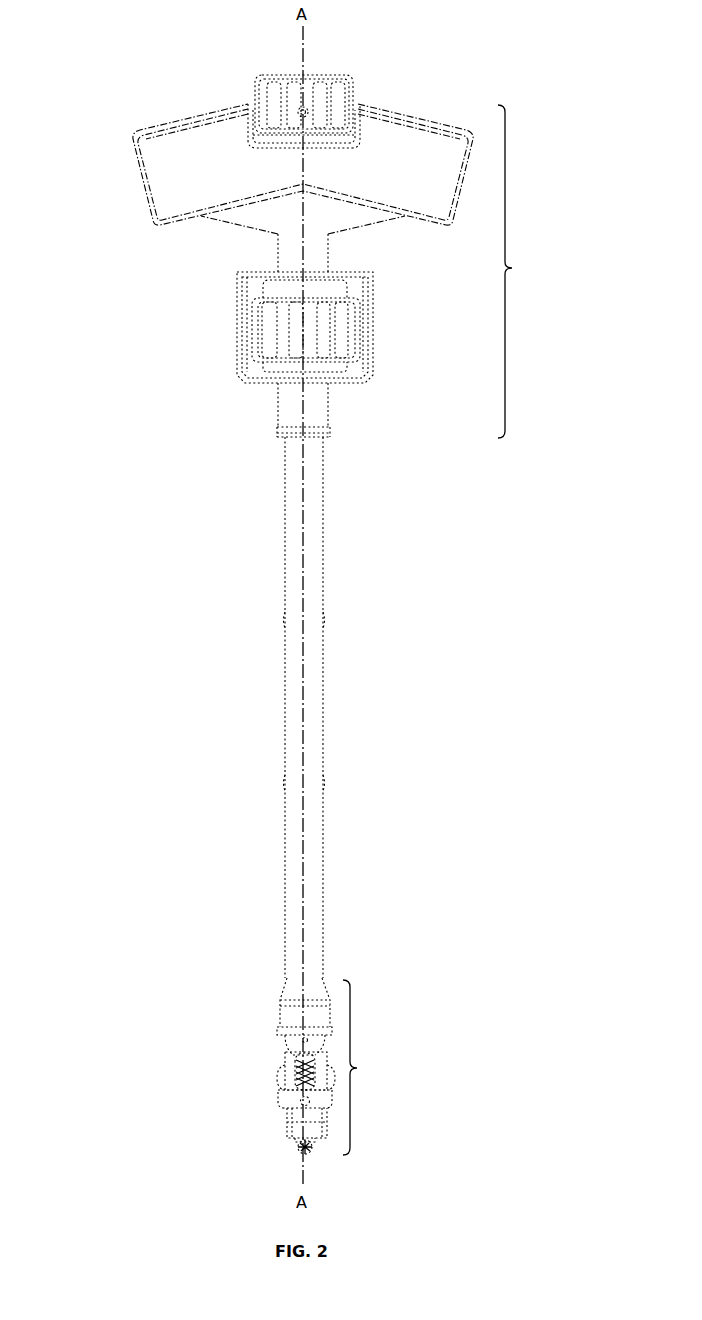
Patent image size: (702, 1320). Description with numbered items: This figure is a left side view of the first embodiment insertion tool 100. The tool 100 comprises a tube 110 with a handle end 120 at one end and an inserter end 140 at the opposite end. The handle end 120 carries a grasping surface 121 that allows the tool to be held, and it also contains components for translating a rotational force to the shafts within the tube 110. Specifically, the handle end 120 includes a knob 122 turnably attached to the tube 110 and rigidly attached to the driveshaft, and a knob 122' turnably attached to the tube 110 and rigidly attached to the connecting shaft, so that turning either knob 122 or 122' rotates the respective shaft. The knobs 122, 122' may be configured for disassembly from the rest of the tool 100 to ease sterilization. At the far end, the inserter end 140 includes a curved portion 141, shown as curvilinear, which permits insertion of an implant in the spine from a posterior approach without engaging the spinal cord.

The insertion tool 100 is at (392, 601).
The tube 110 is at (323, 757).
The handle end 120 is at (415, 271).
The grasping surface 121 is at (140, 170).
The knob 122 is at (270, 327).
The knob 122' is at (274, 90).
The inserter end 140 is at (338, 1066).
The curved portion 141 is at (298, 1084).